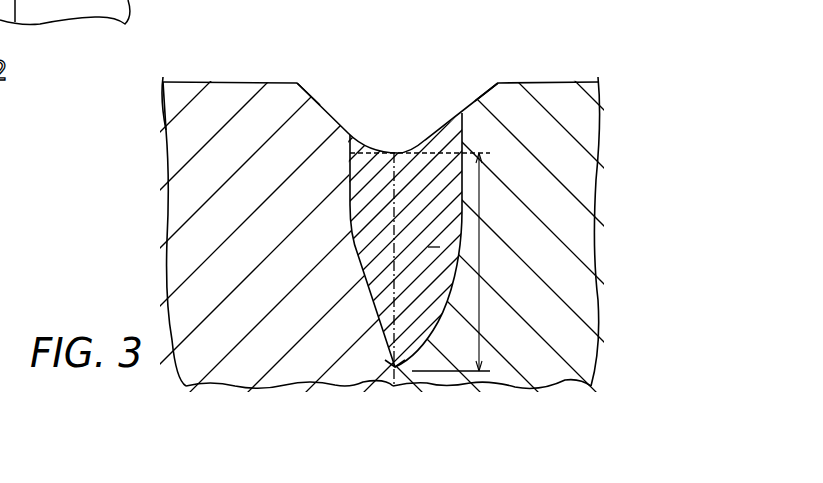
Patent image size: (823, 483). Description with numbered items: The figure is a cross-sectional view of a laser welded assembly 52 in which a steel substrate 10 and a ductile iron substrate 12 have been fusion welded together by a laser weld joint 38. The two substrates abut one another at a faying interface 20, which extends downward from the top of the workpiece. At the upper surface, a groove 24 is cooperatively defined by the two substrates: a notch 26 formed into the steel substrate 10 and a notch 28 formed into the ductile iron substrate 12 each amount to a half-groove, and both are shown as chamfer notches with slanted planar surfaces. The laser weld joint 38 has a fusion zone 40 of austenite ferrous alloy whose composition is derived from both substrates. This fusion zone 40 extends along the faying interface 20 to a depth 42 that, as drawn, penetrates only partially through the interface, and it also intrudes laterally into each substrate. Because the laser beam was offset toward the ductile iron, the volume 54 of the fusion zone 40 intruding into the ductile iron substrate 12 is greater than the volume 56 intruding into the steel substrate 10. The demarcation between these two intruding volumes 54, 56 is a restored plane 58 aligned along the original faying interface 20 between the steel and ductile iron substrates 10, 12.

The steel substrate 10 is at (250, 297).
The ductile iron substrate 12 is at (566, 301).
The faying interface 20 is at (378, 363).
The groove 24 is at (338, 78).
The notch 26 is at (299, 83).
The notch 28 is at (486, 88).
The laser weld joint 38 is at (428, 247).
The fusion zone 40 is at (351, 176).
The depth 42 is at (481, 233).
The laser welded assembly 52 is at (150, 119).
The volume of the fusion zone intruding into the ductile iron substrate 54 is at (430, 158).
The volume of the fusion zone intruding into the steel substrate 56 is at (378, 160).
The restored plane 58 is at (395, 251).